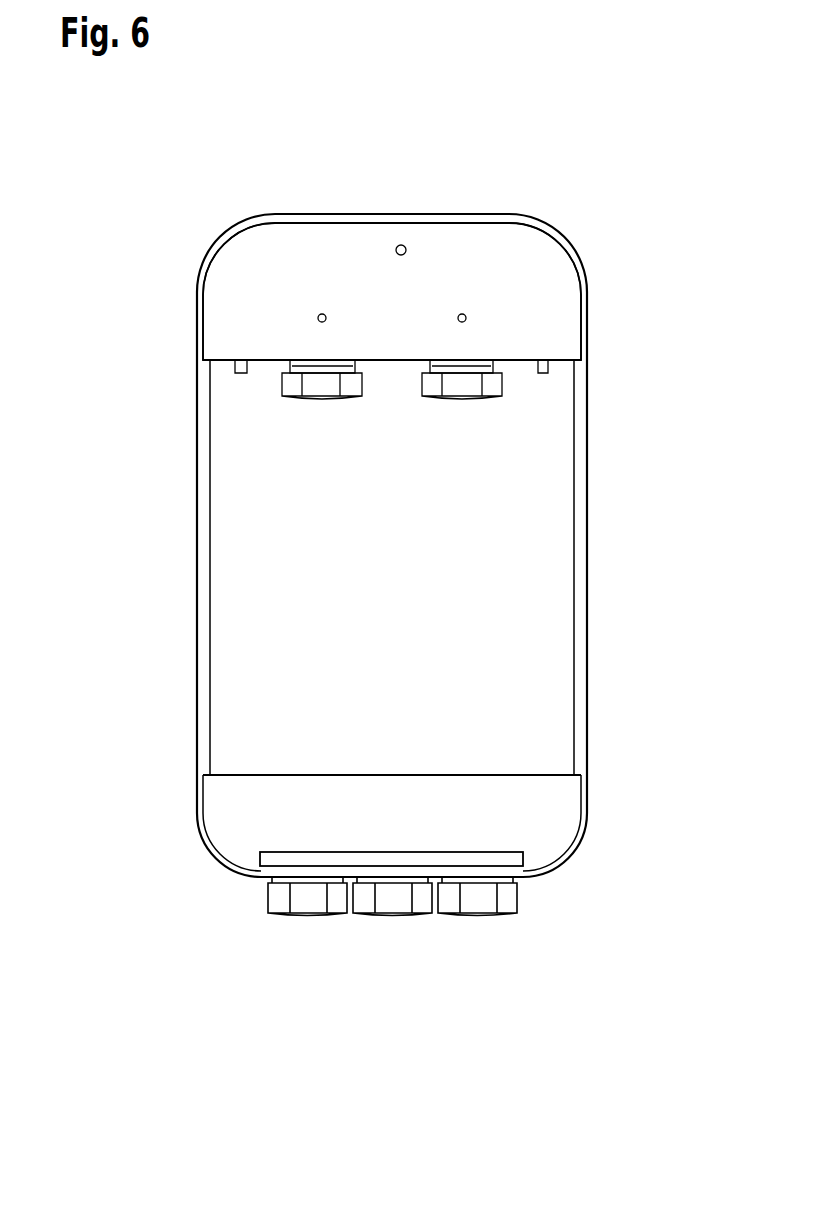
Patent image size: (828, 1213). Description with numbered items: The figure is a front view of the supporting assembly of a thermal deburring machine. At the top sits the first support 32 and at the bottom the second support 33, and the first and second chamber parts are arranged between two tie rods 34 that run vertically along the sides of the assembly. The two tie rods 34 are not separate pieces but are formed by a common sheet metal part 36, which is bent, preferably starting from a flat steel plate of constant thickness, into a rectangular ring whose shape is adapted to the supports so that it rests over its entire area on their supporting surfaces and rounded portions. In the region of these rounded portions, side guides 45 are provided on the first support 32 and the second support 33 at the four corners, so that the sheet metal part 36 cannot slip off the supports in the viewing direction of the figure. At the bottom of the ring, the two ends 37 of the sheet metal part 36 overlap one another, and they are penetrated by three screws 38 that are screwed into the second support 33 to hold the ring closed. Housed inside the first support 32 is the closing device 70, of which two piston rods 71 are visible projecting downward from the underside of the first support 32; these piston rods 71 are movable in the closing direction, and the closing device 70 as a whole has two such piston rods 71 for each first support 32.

The first support 32 is at (548, 318).
The second support 33 is at (550, 786).
The tie rod 34 is at (208, 516).
The sheet metal part 36 is at (578, 617).
The end of the sheet metal part 37 is at (258, 882).
The screw 38 is at (310, 905).
The side guide 45 is at (216, 267).
The closing device 70 is at (392, 424).
The piston rod 71 is at (320, 392).